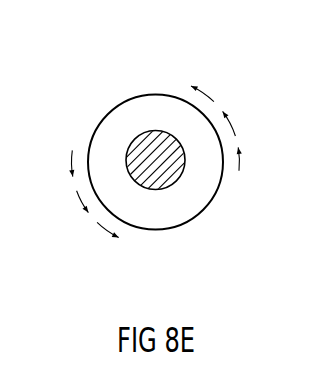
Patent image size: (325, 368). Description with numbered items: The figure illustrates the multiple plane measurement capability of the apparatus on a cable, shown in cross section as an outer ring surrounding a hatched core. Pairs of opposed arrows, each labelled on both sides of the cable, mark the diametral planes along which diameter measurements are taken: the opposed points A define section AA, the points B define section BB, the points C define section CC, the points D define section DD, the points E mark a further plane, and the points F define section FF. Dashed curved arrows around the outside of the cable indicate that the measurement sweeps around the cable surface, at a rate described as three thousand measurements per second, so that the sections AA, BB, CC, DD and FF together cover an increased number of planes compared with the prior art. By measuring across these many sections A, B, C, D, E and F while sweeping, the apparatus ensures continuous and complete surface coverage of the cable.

The measurement section AA A is at (171, 93).
The measurement section BB B is at (148, 91).
The measurement section CC C is at (128, 97).
The measurement section DD D is at (107, 106).
The measurement section EE E is at (91, 123).
The measurement section FF F is at (86, 143).